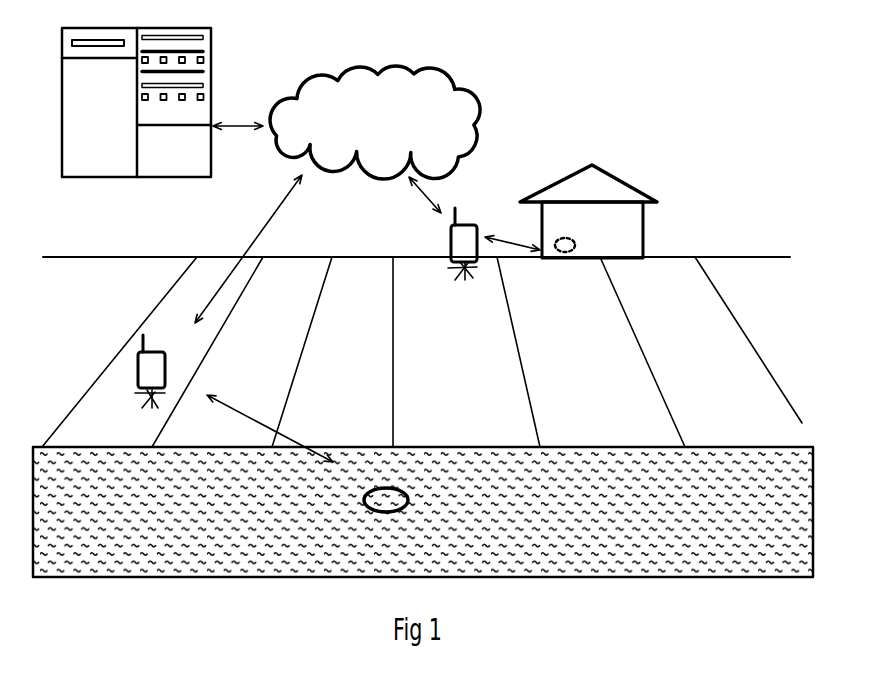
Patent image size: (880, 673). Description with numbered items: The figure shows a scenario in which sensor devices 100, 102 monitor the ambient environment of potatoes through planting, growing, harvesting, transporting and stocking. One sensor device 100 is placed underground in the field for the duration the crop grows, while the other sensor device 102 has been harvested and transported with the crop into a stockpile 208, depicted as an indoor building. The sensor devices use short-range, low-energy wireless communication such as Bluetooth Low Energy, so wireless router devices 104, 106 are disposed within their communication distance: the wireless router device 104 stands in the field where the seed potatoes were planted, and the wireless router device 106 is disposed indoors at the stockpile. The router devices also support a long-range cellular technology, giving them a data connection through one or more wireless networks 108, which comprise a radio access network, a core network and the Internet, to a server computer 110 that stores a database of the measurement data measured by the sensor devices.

The sensor device 100 is at (408, 502).
The sensor device 102 is at (576, 246).
The wireless router device 104 is at (165, 367).
The wireless router device 106 is at (451, 233).
The wireless networks 108 is at (478, 118).
The server computer 110 is at (211, 40).
The stockpile 208 is at (657, 202).